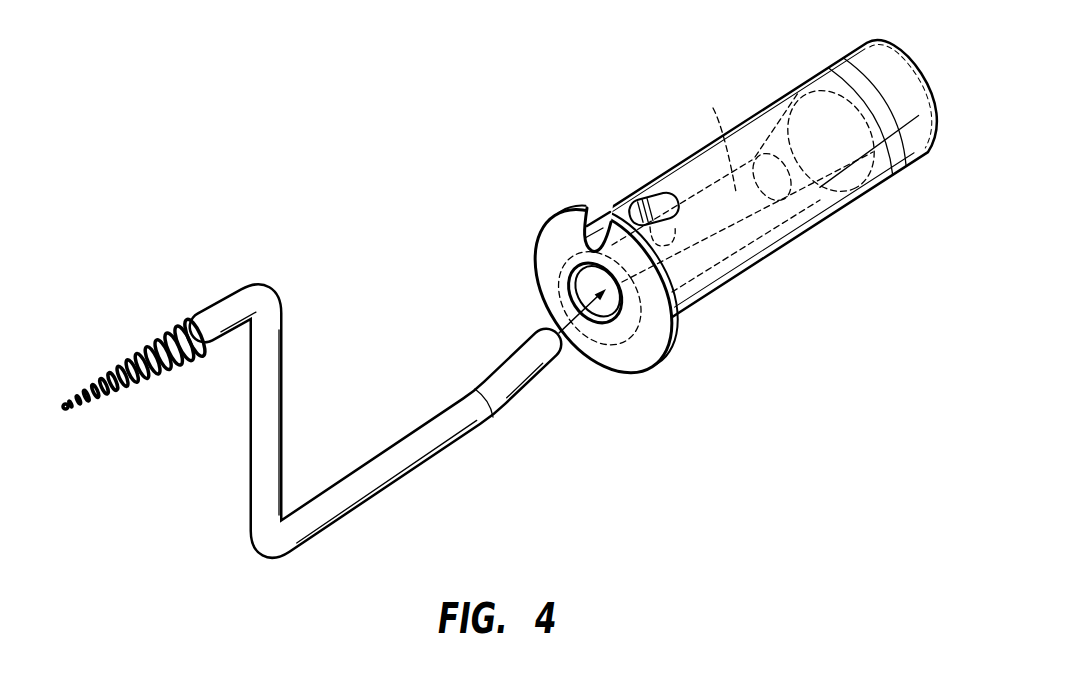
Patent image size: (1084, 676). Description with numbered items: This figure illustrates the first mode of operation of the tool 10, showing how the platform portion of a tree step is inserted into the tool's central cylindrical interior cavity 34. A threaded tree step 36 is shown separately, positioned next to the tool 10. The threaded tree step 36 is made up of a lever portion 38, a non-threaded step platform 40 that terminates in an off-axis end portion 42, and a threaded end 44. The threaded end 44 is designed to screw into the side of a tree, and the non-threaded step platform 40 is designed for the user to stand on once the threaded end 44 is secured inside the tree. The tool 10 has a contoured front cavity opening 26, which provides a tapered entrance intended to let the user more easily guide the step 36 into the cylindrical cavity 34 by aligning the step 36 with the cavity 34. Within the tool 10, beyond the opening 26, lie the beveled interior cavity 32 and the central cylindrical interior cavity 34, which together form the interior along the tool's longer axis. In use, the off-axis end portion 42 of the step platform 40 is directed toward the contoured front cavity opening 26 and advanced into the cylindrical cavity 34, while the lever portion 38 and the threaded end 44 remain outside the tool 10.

The tool 10 is at (724, 202).
The contoured front cavity opening 26 is at (585, 267).
The beveled interior cavity 32 is at (793, 92).
The central cylindrical interior cavity 34 is at (731, 132).
The threaded tree step 36 is at (304, 445).
The lever portion 38 is at (249, 452).
The non-threaded step platform 40 is at (408, 452).
The off-axis end portion 42 is at (510, 367).
The threaded end 44 is at (221, 313).